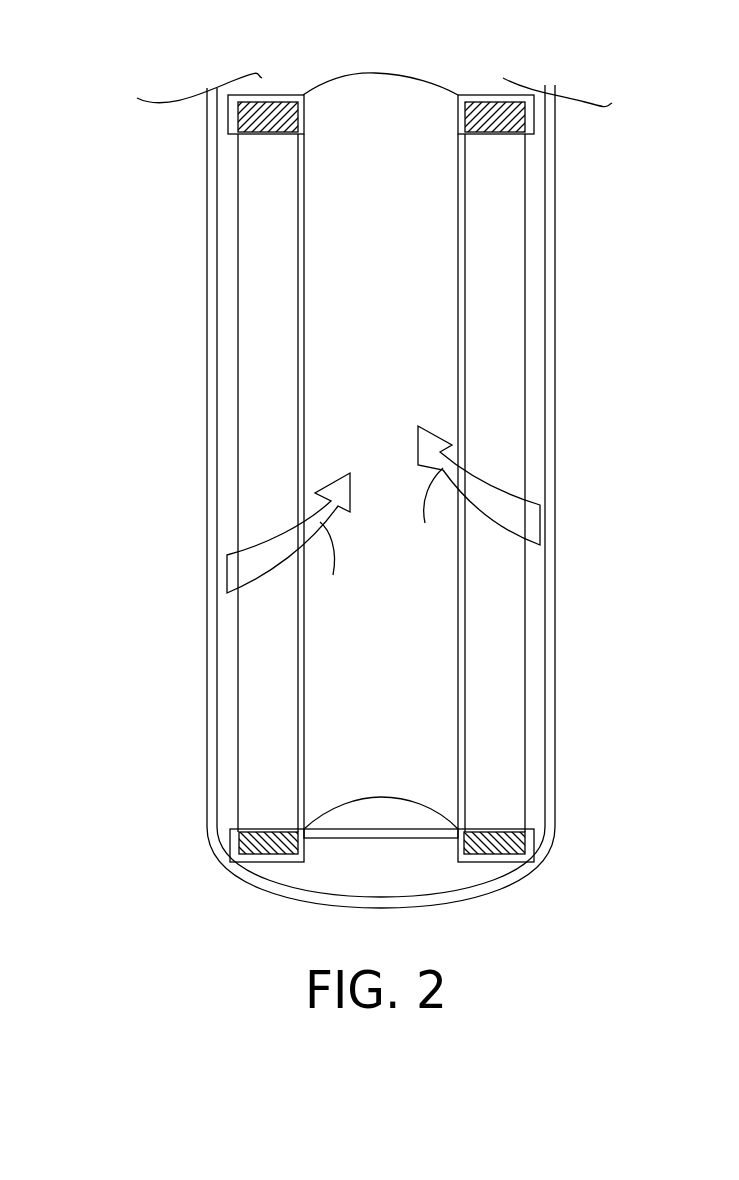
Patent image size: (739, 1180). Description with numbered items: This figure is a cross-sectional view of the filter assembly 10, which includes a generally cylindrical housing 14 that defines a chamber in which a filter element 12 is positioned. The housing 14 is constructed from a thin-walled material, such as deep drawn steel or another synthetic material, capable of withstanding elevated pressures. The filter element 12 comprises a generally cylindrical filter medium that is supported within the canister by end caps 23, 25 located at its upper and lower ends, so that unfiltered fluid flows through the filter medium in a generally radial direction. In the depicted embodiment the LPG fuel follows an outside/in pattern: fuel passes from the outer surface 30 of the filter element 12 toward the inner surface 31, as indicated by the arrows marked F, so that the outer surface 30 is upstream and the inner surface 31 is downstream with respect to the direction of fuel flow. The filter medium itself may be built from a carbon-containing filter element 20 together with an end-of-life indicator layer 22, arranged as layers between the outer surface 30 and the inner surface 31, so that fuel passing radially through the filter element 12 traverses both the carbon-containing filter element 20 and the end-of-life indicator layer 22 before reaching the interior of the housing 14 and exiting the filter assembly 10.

The filter assembly 10 is at (112, 438).
The filter element 12 is at (238, 750).
The housing 14 is at (205, 460).
The carbon-containing filter element 20 is at (253, 332).
The end-of-life indicator layer 22 is at (285, 255).
The end cap 23 is at (480, 100).
The end cap 25 is at (262, 848).
The outer surface 30 is at (237, 700).
The inner surface 31 is at (305, 402).